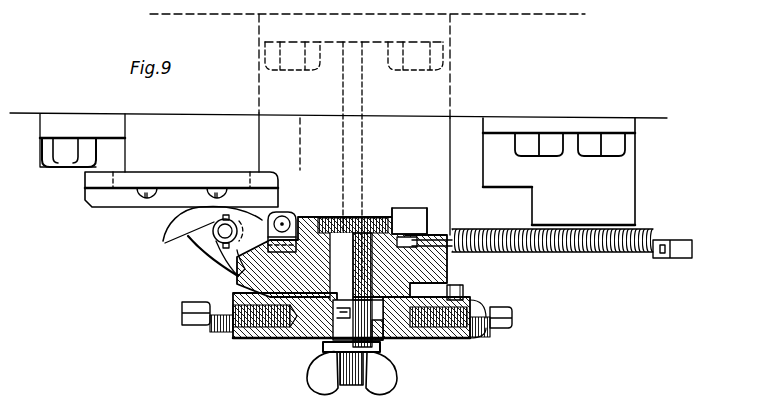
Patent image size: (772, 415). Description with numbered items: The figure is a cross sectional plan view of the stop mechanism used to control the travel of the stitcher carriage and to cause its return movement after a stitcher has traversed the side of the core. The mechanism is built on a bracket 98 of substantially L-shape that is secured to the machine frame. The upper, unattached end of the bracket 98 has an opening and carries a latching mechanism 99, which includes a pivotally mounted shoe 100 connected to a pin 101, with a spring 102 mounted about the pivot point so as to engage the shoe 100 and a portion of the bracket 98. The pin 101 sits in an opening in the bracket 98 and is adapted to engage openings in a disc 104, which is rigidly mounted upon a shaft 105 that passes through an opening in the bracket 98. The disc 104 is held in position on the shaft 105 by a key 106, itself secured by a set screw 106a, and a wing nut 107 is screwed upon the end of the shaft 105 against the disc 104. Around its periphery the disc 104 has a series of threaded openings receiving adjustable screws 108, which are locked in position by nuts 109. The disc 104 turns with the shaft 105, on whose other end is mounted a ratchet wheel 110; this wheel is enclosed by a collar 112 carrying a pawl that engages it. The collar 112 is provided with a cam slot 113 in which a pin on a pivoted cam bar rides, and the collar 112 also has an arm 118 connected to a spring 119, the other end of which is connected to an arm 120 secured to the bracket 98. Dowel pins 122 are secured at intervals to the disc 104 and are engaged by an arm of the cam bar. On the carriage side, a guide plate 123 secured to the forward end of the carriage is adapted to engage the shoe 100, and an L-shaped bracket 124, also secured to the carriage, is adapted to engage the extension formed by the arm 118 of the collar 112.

The bracket 98 is at (438, 82).
The latching mechanism 99 is at (210, 242).
The shoe 100 is at (165, 236).
The pin 101 is at (285, 222).
The spring 102 is at (238, 273).
The disc 104 is at (310, 333).
The shaft 105 is at (388, 341).
The key 106 is at (398, 339).
The set screw 106a is at (328, 352).
The wing nut 107 is at (323, 386).
The adjustable screws 108 is at (193, 316).
The nuts 109 is at (223, 333).
The ratchet wheel 110 is at (370, 217).
The collar 112 is at (409, 210).
The cam slot 113 is at (452, 253).
The arm 118 is at (414, 219).
The spring 119 is at (657, 233).
The arm 120 is at (665, 252).
The dowel pins 122 is at (466, 292).
The guide plate 123 is at (92, 204).
The bracket 124 is at (634, 193).